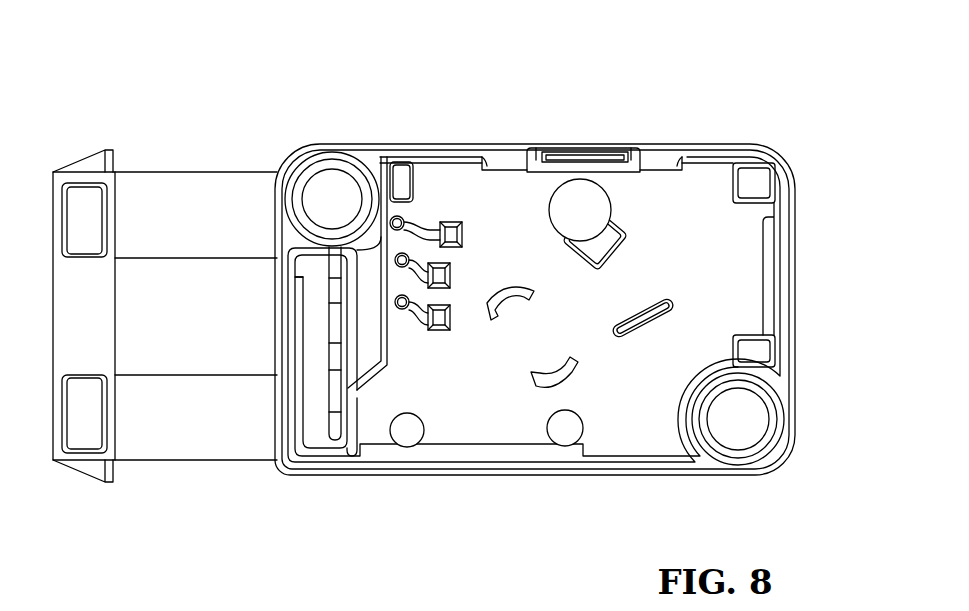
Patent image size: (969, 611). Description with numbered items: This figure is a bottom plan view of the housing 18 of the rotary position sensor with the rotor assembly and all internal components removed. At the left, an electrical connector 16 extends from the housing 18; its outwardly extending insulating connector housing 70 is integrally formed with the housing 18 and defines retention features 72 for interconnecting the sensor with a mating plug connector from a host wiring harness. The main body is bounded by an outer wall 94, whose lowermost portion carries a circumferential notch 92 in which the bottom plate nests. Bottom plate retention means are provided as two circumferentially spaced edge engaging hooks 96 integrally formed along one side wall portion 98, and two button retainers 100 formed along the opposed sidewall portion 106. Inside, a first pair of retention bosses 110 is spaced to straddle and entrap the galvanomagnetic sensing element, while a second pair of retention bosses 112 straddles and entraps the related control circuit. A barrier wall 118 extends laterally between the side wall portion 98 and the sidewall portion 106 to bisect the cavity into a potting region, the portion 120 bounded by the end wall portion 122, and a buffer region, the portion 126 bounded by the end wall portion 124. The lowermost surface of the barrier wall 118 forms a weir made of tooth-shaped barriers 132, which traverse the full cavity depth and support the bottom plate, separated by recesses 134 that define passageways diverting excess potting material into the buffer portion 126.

The electrical connector 16 is at (163, 440).
The housing 18 is at (124, 110).
The connector housing 70 is at (60, 355).
The retention features 72 is at (88, 160).
The circumferential notch 92 is at (775, 292).
The outer wall 94 is at (793, 202).
The edge engaging hooks 96 is at (505, 157).
The side wall portion 98 is at (580, 148).
The button retainers 100 is at (412, 440).
The sidewall portion 106 is at (500, 477).
The first pair of retention bosses 110 is at (527, 383).
The second pair of retention bosses 112 is at (672, 302).
The barrier wall 118 is at (360, 428).
The potting region portion 120 is at (623, 400).
The end wall portion 122 is at (775, 320).
The end wall portion 124 is at (293, 320).
The buffer region portion 126 is at (337, 425).
The tooth-shaped barriers 132 is at (337, 320).
The recesses 134 is at (337, 292).